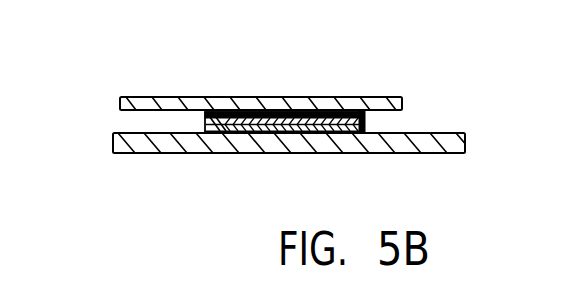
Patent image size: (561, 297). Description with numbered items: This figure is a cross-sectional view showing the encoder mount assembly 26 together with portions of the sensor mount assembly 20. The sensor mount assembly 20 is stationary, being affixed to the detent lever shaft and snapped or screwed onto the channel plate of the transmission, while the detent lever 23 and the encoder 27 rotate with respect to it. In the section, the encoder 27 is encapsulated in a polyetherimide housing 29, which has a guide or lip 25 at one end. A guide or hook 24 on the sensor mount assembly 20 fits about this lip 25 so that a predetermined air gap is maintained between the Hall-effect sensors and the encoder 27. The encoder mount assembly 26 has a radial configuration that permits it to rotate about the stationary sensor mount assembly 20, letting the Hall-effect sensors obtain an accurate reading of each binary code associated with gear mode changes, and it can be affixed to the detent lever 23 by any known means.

The sensor mount assembly 20 is at (227, 97).
The detent lever 23 is at (157, 135).
The guide or hook 24 is at (344, 122).
The guide or lip 25 is at (350, 112).
The encoder mount assembly 26 is at (192, 122).
The encoder 27 is at (269, 130).
The polyetherimide housing 29 is at (200, 113).